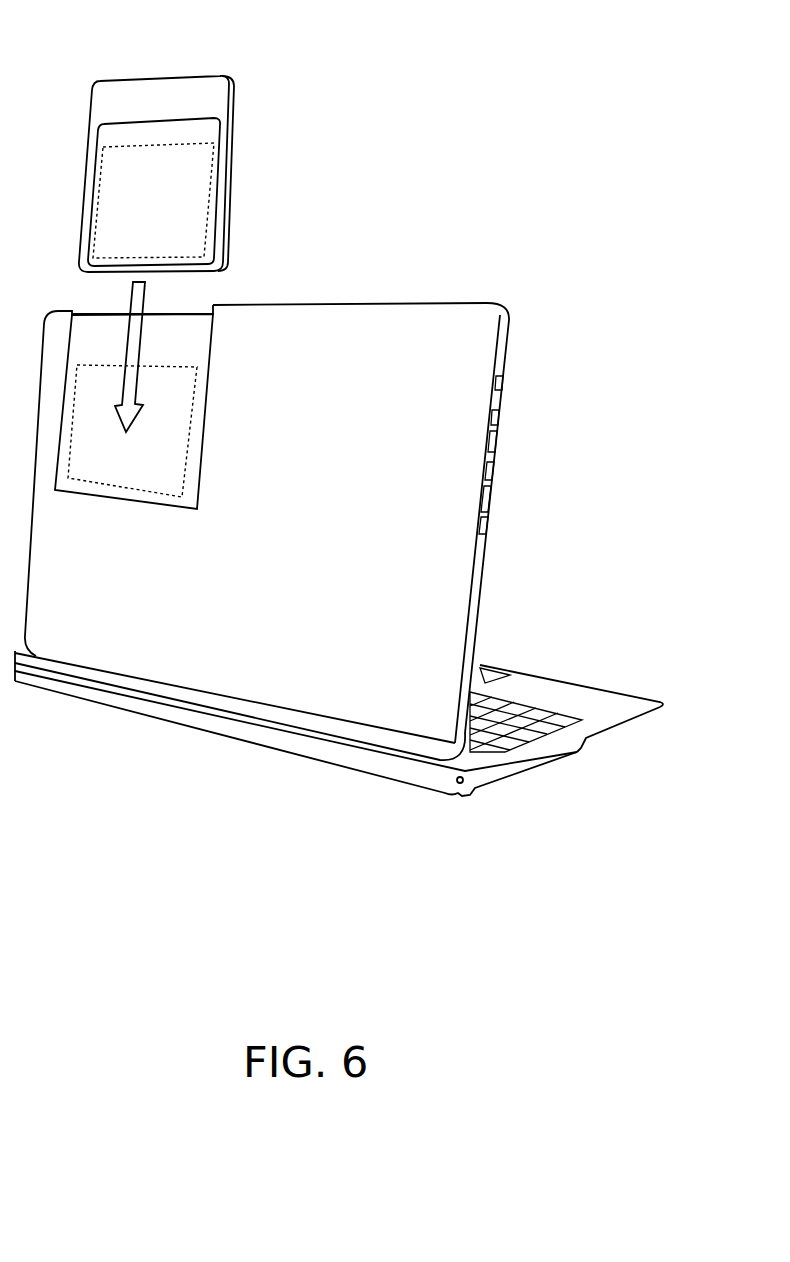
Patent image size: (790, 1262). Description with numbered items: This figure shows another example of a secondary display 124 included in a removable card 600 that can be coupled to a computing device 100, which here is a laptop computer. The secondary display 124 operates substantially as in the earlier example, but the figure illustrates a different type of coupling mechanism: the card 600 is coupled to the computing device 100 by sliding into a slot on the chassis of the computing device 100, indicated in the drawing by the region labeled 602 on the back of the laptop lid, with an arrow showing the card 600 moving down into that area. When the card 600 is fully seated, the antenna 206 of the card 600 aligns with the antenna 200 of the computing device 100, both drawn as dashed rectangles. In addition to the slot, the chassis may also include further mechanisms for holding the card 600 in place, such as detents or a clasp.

The computing device 100 is at (271, 796).
The removable card 600 is at (190, 75).
The secondary display 124 is at (221, 124).
The antenna of the card 206 is at (210, 190).
The antenna of the computing device 200 is at (200, 418).
The recess 602 is at (157, 503).